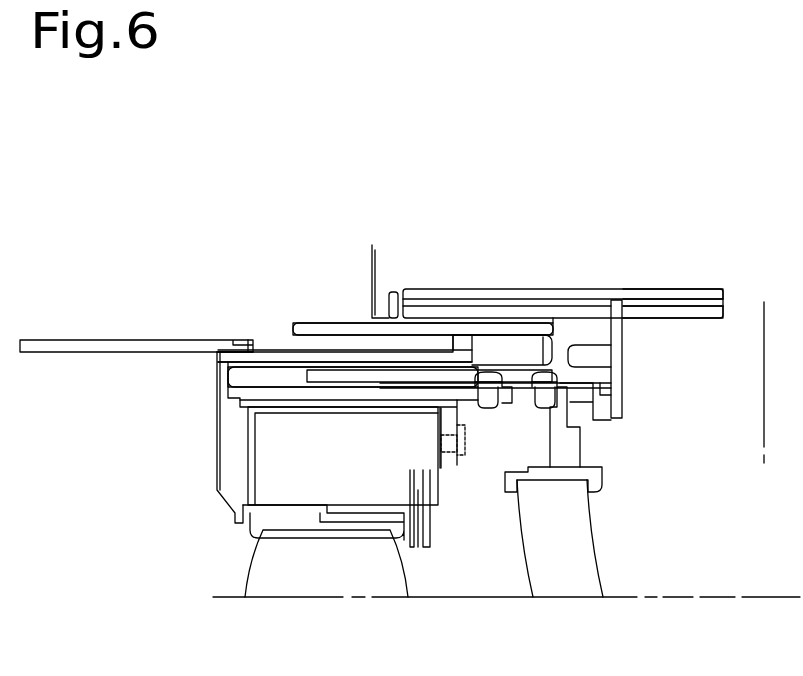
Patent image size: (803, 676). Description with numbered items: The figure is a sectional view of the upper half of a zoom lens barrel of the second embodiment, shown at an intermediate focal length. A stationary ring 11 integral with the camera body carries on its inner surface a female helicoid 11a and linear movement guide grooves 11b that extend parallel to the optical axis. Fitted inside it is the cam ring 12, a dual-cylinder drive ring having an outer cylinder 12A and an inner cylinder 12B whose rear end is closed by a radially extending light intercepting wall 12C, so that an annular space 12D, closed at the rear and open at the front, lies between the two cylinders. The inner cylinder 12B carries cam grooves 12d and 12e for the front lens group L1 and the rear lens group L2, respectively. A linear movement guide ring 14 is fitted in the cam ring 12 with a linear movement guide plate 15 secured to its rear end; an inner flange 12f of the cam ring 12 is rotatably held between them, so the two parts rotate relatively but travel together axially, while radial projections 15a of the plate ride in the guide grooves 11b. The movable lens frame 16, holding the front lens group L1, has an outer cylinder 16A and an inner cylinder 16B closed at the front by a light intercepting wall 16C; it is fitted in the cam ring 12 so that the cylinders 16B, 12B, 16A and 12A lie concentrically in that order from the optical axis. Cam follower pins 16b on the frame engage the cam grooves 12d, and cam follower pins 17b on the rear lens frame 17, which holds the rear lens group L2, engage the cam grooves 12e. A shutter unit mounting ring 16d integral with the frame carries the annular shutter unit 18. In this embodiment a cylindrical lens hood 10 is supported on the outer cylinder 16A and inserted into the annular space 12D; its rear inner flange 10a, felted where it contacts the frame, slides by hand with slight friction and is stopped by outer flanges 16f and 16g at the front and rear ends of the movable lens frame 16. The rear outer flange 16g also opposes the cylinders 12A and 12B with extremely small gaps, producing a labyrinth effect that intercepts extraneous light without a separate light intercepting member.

The lens hood 10 is at (85, 340).
The inner flange 10a is at (257, 343).
The stationary ring 11 is at (696, 272).
The female helicoid 11a is at (640, 310).
The linear movement guide grooves 11b is at (708, 303).
The cam ring 12 is at (388, 196).
The outer cylinder 12A is at (305, 323).
The inner cylinder 12B is at (348, 370).
The light intercepting wall 12C is at (558, 352).
The annular space 12D is at (295, 345).
The cam grooves 12d is at (487, 373).
The cam grooves 12e is at (547, 373).
The inner flange 12f is at (610, 386).
The linear movement guide ring 14 is at (610, 439).
The linear movement guide plate 15 is at (648, 374).
The radial projections 15a is at (615, 300).
The movable lens frame 16 is at (182, 428).
The outer cylinder 16A is at (413, 357).
The inner cylinder 16B is at (285, 400).
The light intercepting wall 16C is at (218, 382).
The cam follower pins 16b is at (490, 377).
The shutter unit mounting ring 16d is at (449, 450).
The outer flange 16f is at (200, 352).
The outer flange 16g is at (453, 363).
The rear lens frame 17 is at (593, 475).
The cam follower pins 17b is at (540, 377).
The shutter unit 18 is at (272, 475).
The front lens group L1 is at (328, 578).
The rear lens group L2 is at (567, 577).